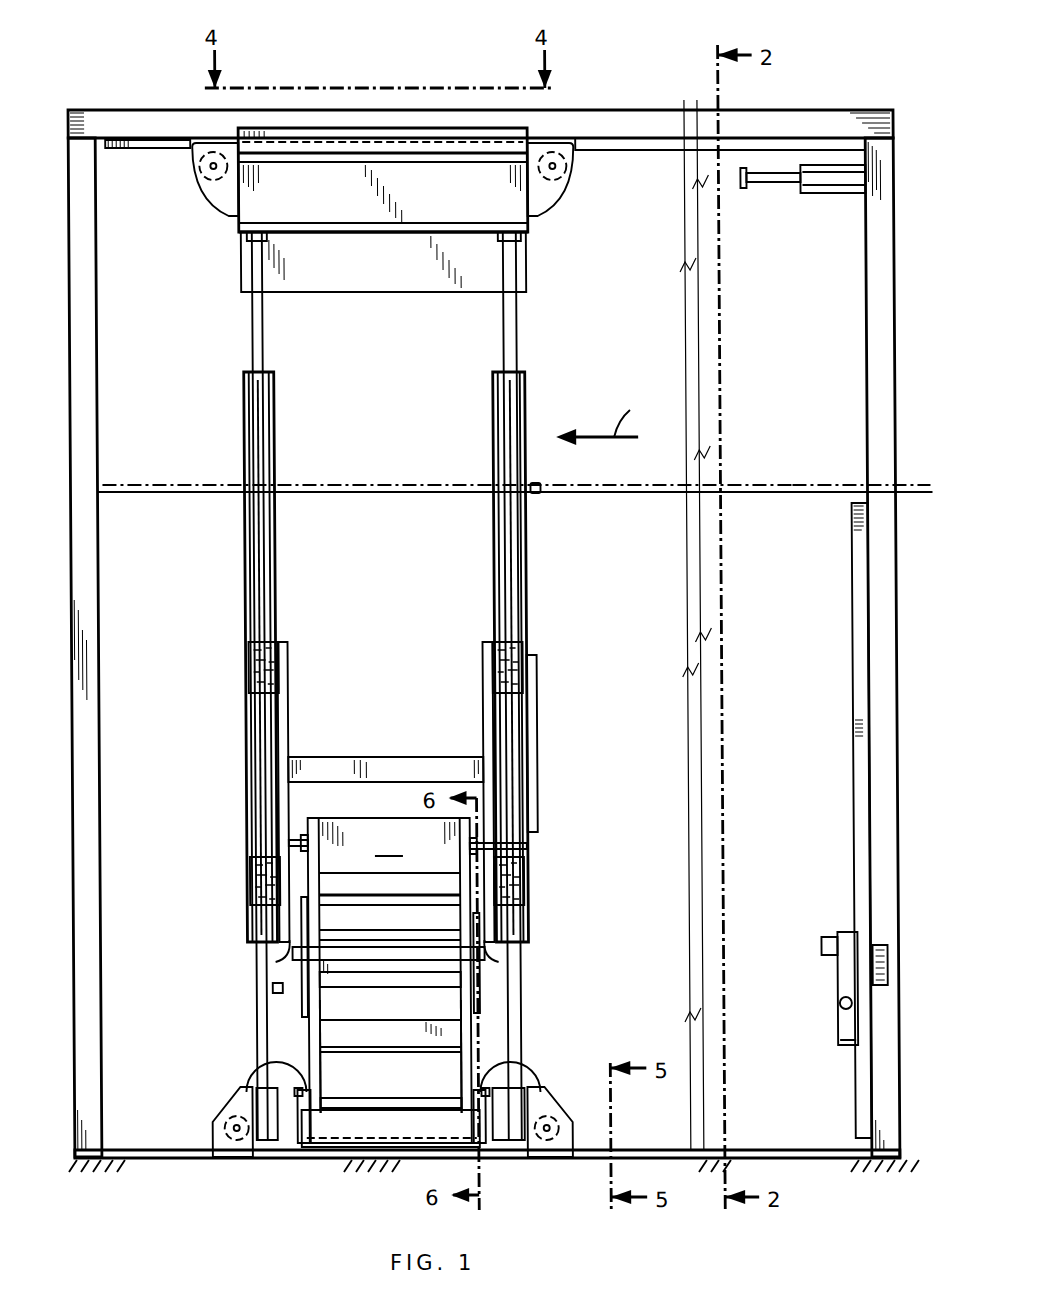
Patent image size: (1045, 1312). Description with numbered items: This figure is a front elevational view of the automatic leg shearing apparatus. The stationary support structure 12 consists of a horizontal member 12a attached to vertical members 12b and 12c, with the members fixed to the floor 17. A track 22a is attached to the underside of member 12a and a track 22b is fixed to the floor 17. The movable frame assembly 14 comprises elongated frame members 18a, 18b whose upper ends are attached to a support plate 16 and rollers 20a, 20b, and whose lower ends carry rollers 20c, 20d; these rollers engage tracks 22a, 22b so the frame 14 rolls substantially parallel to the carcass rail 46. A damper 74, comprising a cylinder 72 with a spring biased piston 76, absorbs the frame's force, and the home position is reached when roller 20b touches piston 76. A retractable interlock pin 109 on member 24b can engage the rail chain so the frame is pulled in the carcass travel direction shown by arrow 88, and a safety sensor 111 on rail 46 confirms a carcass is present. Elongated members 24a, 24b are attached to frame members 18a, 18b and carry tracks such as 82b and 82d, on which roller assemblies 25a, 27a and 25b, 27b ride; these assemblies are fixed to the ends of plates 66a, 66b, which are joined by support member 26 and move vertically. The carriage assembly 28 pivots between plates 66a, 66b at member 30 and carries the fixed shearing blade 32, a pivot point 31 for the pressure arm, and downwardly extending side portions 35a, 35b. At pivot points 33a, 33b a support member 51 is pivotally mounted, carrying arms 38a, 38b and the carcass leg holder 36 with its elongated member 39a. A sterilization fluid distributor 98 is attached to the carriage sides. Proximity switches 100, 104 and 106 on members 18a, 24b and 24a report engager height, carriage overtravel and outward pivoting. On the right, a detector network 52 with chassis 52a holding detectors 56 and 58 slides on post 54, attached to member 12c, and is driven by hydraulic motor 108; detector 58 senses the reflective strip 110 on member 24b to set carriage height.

The support structure 12 is at (490, 606).
The horizontal member 12a is at (602, 126).
The vertical member 12b is at (92, 332).
The vertical member 12c is at (878, 358).
The frame assembly 14 is at (560, 338).
The support plate 16 is at (520, 266).
The floor 17 is at (805, 1152).
The elongated frame member 18a is at (254, 352).
The elongated frame member 18b is at (506, 322).
The roller 20a is at (212, 186).
The roller 20b is at (560, 178).
The roller 20c is at (214, 1128).
The roller 20d is at (548, 1150).
The track 22a is at (152, 150).
The track 22b is at (778, 1152).
The elongated member 24a is at (244, 568).
The elongated member 24b is at (496, 570).
The roller assembly 25a is at (286, 648).
The roller assembly 25b is at (480, 648).
The support member 26 is at (400, 770).
The roller assembly 27a is at (258, 884).
The roller assembly 27b is at (512, 880).
The carriage assembly 28 is at (389, 980).
The member 30 is at (298, 836).
The member point 31 is at (400, 978).
The shearing blade 32 is at (384, 960).
The pivot point 33a is at (250, 1082).
The pivot point 33b is at (498, 1092).
The side portion 35a is at (318, 1064).
The side portion 35b is at (460, 1060).
The carcass leg holder 36 is at (391, 1161).
The arm 38a is at (298, 1130).
The arm 38b is at (480, 1128).
The elongated member 39a is at (338, 1146).
The carcass rail 46 is at (800, 494).
The support member 51 is at (386, 1100).
The detector network 52 is at (802, 984).
The chassis 52a is at (838, 1042).
The post 54 is at (850, 710).
The detector 56 is at (834, 1004).
The detector 58 is at (814, 946).
The plate 66a is at (292, 702).
The plate 66b is at (482, 702).
The cylinder 72 is at (816, 185).
The damper 74 is at (840, 194).
The spring biased piston 76 is at (768, 186).
The track 82b is at (256, 606).
The track 82d is at (516, 606).
The arrow 88 is at (601, 418).
The sterilization fluid distributor 98 is at (300, 1000).
The proximity switch 100 is at (266, 988).
The proximity switch 104 is at (510, 952).
The proximity switch 106 is at (278, 950).
The hydraulic motor 108 is at (876, 944).
The retractable interlock pin 109 is at (536, 496).
The reflective strip 110 is at (534, 700).
The safety sensor 111 is at (908, 484).